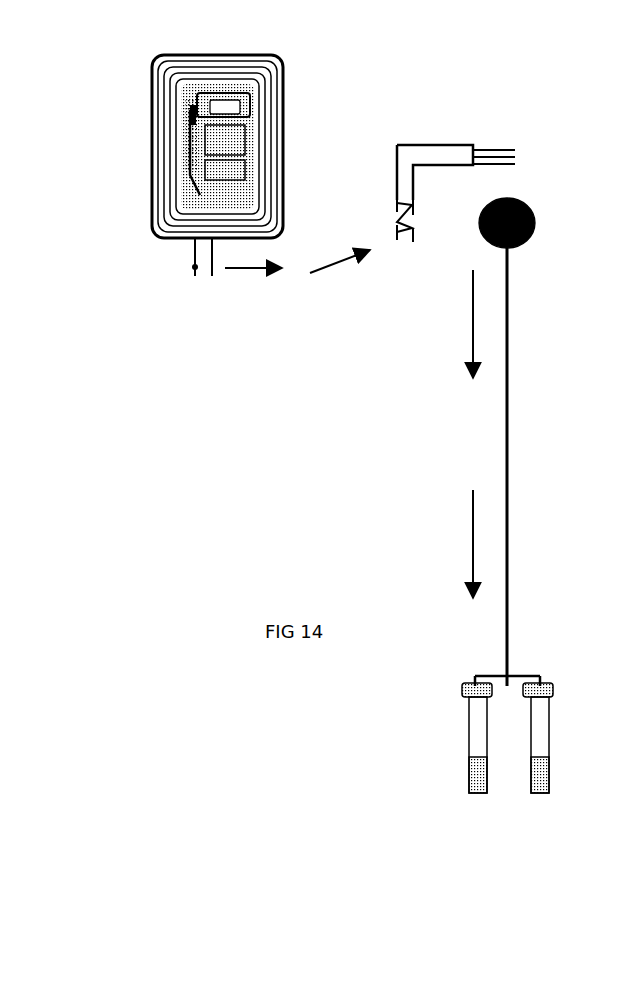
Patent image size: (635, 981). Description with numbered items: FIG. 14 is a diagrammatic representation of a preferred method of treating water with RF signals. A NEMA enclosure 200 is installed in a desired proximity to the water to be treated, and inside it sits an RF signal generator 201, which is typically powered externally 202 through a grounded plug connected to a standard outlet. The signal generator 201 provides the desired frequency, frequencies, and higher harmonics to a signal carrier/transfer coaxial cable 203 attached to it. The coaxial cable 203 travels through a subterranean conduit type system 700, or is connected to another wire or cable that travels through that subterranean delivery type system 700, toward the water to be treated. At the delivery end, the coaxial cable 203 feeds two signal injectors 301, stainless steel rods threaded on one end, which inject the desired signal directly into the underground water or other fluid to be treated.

The NEMA enclosure 200 is at (216, 55).
The RF signal generator 201 is at (190, 126).
The external power 202 is at (192, 278).
The signal carrier/transfer coaxial cable 203 is at (395, 250).
The subterranean conduit type system 700 is at (522, 460).
The RF signal injector 301 is at (484, 806).